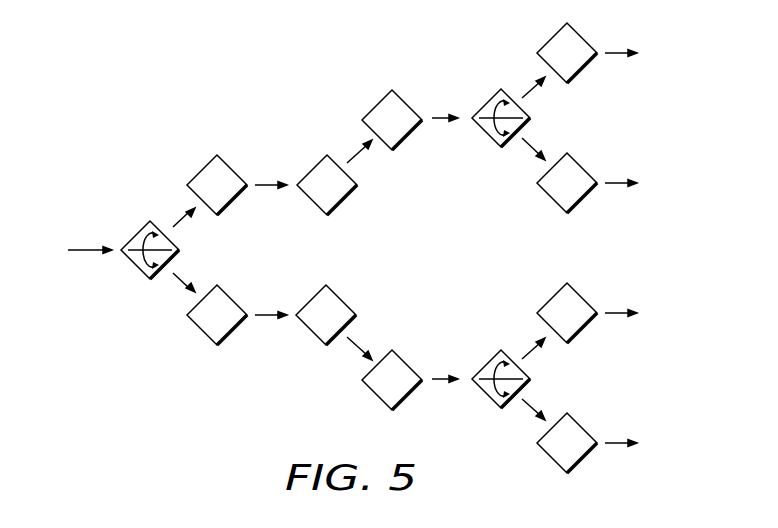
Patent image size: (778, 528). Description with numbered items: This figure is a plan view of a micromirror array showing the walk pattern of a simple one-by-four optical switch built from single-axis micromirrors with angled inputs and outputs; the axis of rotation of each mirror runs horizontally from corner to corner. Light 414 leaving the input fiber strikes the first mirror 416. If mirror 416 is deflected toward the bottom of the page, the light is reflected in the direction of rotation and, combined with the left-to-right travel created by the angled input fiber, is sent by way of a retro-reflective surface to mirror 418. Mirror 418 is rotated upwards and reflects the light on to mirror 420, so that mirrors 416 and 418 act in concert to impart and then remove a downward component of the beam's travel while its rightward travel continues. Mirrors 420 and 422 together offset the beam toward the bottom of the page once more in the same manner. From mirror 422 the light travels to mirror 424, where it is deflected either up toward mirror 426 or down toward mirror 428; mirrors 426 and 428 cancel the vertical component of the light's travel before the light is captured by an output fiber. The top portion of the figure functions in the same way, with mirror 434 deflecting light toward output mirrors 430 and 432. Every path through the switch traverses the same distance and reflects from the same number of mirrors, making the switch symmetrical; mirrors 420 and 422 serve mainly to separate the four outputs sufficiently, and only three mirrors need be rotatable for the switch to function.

The light 414 is at (88, 250).
The first mirror 416 is at (135, 268).
The mirror 418 is at (200, 330).
The mirror 420 is at (310, 330).
The mirror 422 is at (375, 397).
The mirror 424 is at (488, 397).
The mirror 426 is at (580, 328).
The mirror 428 is at (580, 458).
The output mirror 430 is at (580, 35).
The output mirror 432 is at (580, 165).
The mirror 434 is at (488, 102).